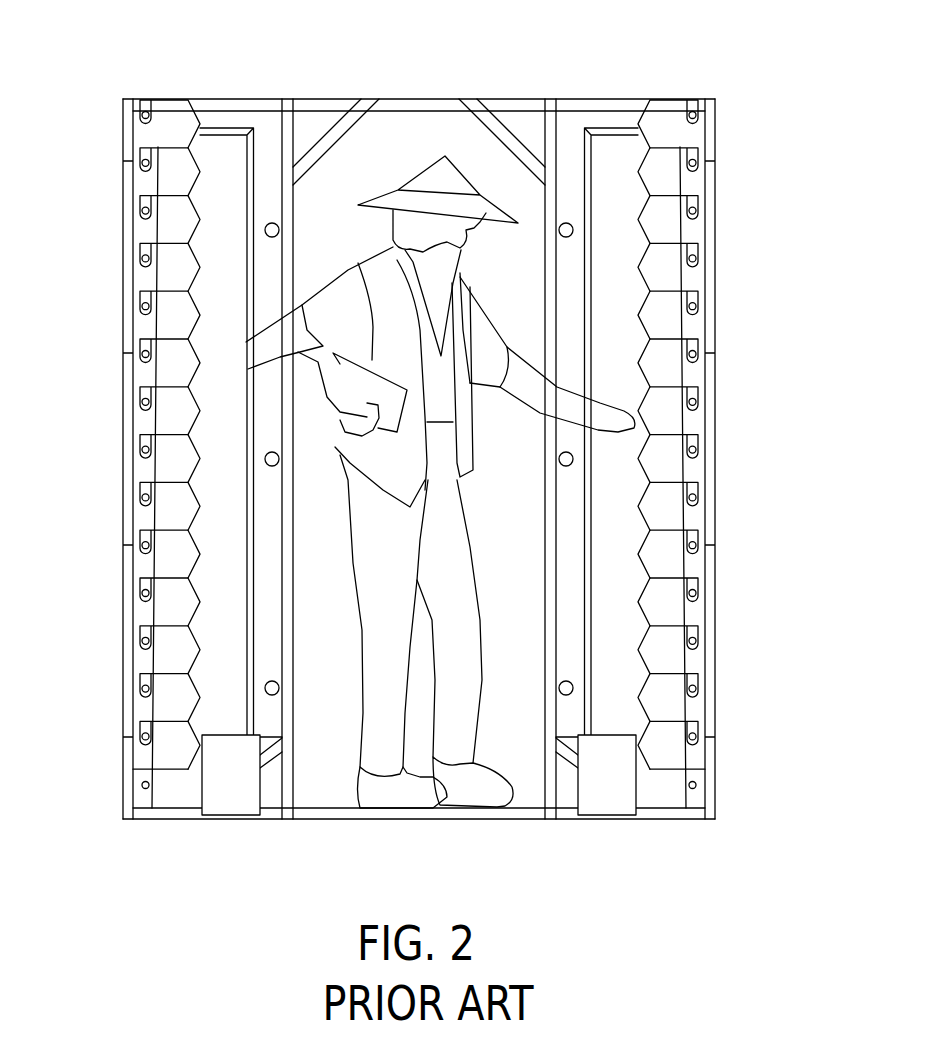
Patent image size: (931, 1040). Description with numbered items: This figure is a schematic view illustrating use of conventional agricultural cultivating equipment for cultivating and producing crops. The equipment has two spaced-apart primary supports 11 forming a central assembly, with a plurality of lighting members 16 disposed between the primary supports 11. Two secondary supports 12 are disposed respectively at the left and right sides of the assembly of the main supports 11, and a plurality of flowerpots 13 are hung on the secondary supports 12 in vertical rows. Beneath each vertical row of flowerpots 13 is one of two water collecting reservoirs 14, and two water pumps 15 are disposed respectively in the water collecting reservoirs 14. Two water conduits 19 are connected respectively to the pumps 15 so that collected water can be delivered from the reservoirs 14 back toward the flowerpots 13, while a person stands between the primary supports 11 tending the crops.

The primary support 11 is at (493, 131).
The secondary support 12 is at (118, 87).
The flowerpot 13 is at (140, 316).
The water collecting reservoir 14 is at (183, 800).
The water pump 15 is at (235, 808).
The lighting member 16 is at (265, 230).
The water conduit 19 is at (253, 140).